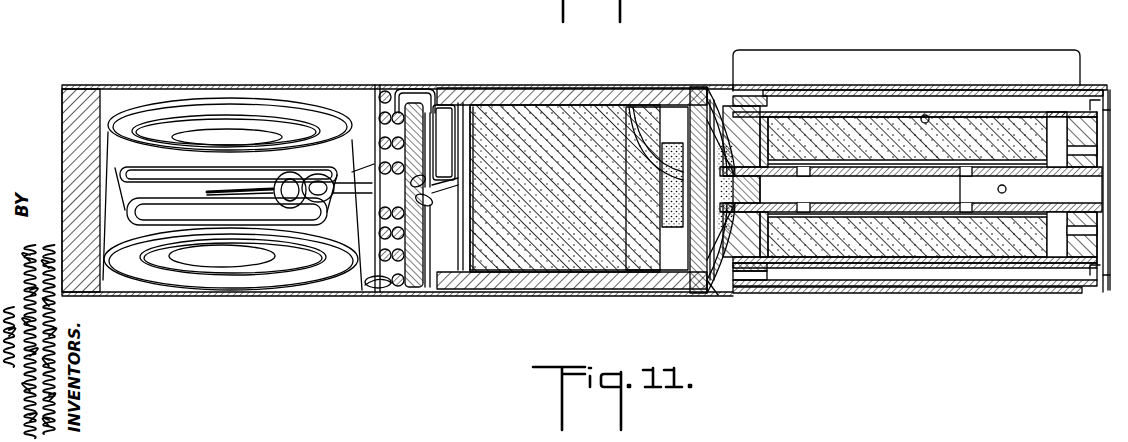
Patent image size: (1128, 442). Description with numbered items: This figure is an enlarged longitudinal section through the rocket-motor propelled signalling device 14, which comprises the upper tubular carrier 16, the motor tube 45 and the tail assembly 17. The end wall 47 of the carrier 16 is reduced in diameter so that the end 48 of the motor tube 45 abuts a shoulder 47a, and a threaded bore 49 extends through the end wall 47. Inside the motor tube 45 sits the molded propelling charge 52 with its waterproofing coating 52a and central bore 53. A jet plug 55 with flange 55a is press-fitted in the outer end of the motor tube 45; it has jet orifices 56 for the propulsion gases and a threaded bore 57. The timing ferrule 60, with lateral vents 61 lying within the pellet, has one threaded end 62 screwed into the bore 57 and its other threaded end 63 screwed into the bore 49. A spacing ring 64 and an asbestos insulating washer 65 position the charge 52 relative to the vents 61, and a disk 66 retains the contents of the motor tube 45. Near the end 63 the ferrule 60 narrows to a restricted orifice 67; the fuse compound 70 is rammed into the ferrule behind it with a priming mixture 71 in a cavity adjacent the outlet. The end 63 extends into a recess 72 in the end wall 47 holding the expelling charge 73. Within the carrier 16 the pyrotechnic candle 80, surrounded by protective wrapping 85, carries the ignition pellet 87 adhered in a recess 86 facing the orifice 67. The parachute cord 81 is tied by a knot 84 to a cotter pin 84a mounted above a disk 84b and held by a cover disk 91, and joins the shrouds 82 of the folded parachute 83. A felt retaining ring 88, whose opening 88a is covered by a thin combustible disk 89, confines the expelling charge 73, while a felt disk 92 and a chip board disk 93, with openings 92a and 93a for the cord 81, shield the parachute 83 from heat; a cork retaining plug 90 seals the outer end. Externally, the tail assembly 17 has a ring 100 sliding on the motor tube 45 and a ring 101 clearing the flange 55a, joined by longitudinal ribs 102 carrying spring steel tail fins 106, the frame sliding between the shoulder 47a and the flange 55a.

The rocket-motor propelled signalling or element-containing device 14 is at (541, 76).
The upper tubular carrier 16 is at (255, 85).
The tail assembly 17 is at (914, 307).
The motor tube 45 is at (966, 214).
The end wall 47 is at (720, 105).
The shoulder 47a is at (722, 290).
The end of the motor tube 48 is at (748, 290).
The threaded bore 49 is at (712, 283).
The rocket-motor propelling charge 52 is at (956, 135).
The waterproofing coating 52a is at (927, 115).
The central bore 53 is at (853, 113).
The jet plug 55 is at (1085, 258).
The flange 55a is at (1100, 112).
The jet orifices 56 is at (1082, 143).
The threaded bore 57 is at (1062, 252).
The timing ferrule 60 is at (857, 190).
The lateral vents 61 is at (968, 212).
The threaded end 62 is at (1062, 150).
The spacing ring 64 is at (1058, 115).
The threaded end 63 is at (758, 272).
The asbestos insulating washer 65 is at (742, 142).
The disk 66 is at (766, 140).
The restricted orifice 67 is at (705, 215).
The time mixture or fuse compound 70 is at (800, 205).
The priming mixture 71 is at (725, 207).
The recess 72 is at (738, 203).
The expelling charge 73 is at (748, 98).
The pyrotechnic candle 80 is at (492, 118).
The parachute cord 81 is at (372, 95).
The shrouds 82 is at (207, 195).
The parachute 83 is at (188, 103).
The knot 84 is at (414, 290).
The cotter pin 84a is at (428, 270).
The disk 84b is at (465, 268).
The protective wrapping 85 is at (535, 283).
The recess 86 is at (635, 135).
The pellet 87 is at (616, 130).
The shock-absorbing and charge retaining ring 88 is at (698, 110).
The opening 88a is at (670, 150).
The thin disk 89 is at (609, 242).
The retaining plug or disk 90 is at (66, 136).
The cover disk 91 is at (447, 118).
The disk 92 is at (380, 290).
The opening 92a is at (417, 93).
The disk 93 is at (386, 90).
The opening 93a is at (372, 290).
The ring 100 is at (768, 92).
The ring 101 is at (1092, 272).
The ribs 102 is at (832, 86).
The tail fins 106 is at (895, 58).